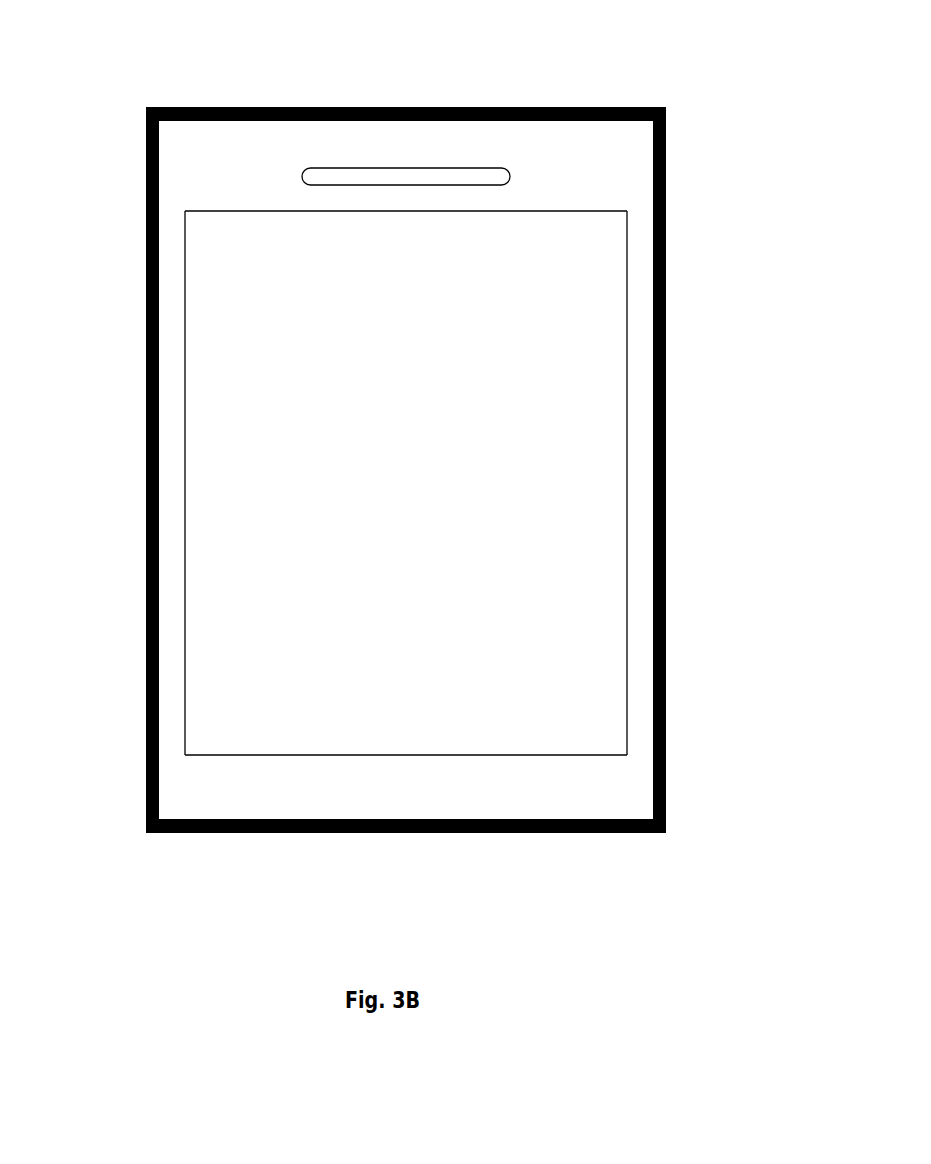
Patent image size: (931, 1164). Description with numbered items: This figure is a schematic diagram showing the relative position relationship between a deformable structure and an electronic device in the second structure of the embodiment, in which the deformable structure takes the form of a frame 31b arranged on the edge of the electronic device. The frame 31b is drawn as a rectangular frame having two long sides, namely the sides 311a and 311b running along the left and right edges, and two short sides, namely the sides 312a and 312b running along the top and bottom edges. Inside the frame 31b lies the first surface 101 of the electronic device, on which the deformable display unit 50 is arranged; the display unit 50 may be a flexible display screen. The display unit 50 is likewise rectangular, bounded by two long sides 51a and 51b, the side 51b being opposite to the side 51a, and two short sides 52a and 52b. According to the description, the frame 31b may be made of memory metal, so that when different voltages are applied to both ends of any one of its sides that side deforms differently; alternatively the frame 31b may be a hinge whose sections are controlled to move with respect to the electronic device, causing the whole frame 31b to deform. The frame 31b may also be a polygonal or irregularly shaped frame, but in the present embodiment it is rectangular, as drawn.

The first surface 101 is at (412, 470).
The display unit 50 is at (405, 477).
The long side of display unit 51a is at (185, 483).
The long side of display unit 51b is at (627, 483).
The short side of display unit 52a is at (533, 211).
The short side of display unit 52b is at (406, 755).
The long side of frame 311a is at (147, 665).
The long side of frame 311b is at (665, 675).
The short side of frame 312a is at (295, 107).
The short side of frame 312b is at (289, 833).
The frame 31b is at (665, 832).